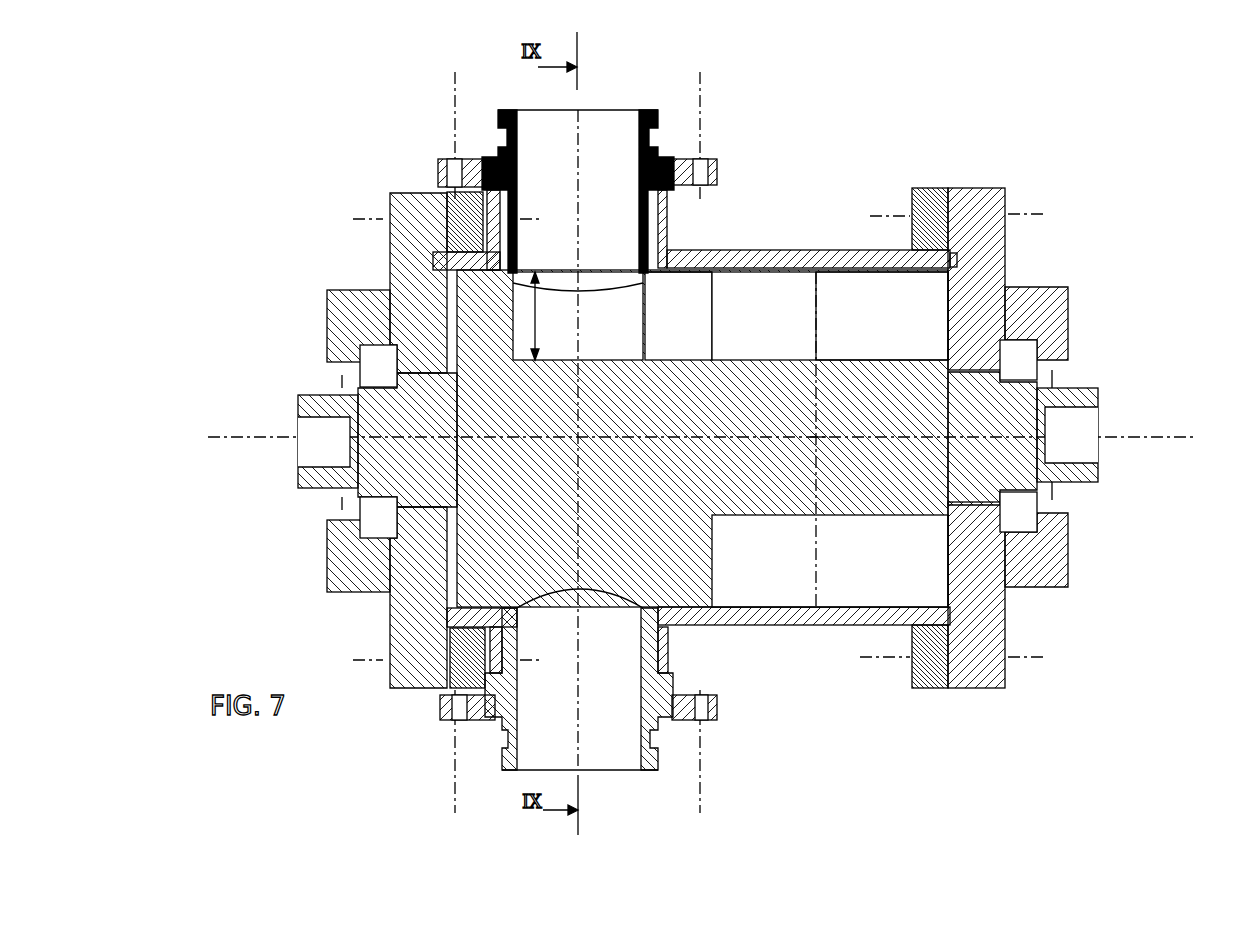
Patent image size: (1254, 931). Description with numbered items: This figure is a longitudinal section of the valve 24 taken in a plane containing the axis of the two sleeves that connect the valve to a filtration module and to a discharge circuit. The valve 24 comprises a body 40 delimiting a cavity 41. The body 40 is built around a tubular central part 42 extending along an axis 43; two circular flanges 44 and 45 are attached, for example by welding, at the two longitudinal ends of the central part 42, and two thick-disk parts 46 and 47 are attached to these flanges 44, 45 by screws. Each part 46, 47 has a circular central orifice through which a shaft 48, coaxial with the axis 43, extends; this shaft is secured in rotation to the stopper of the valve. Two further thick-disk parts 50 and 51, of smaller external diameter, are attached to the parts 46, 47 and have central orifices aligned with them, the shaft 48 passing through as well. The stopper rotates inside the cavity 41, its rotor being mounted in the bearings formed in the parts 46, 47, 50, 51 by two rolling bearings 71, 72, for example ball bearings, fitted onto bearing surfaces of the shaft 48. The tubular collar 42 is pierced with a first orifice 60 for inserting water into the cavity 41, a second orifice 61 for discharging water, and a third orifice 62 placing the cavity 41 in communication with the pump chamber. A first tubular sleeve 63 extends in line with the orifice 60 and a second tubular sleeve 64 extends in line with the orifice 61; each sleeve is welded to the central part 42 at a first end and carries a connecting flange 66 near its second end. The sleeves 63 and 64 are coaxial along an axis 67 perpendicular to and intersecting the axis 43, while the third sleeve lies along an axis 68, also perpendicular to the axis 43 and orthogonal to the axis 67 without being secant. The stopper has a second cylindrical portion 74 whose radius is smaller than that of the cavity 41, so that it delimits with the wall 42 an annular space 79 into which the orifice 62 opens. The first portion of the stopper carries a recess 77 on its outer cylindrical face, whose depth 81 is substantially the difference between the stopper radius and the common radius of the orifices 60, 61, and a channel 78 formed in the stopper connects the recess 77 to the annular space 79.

The valve 24 is at (1091, 155).
The body 40 is at (723, 409).
The cavity 41 is at (771, 345).
The tubular central part 42 is at (853, 250).
The axis 43 is at (1152, 433).
The circular flange 44 is at (471, 672).
The circular flange 45 is at (925, 690).
The part 46 is at (420, 197).
The part 47 is at (983, 208).
The shaft 48 is at (302, 406).
The part 50 is at (355, 290).
The part 51 is at (1045, 290).
The first orifice 60 is at (518, 607).
The second orifice 61 is at (643, 273).
The third orifice 62 is at (891, 512).
The first tubular sleeve 63 is at (672, 672).
The second tubular sleeve 64 is at (668, 222).
The connecting flange 66 is at (720, 170).
The axis 67 is at (580, 213).
The axis 68 is at (818, 437).
The rolling bearing 71 is at (378, 368).
The rolling bearing 72 is at (1020, 364).
The second cylindrical portion 74 is at (740, 497).
The recess 77 is at (571, 345).
The channel 78 is at (691, 345).
The annular space 79 is at (883, 345).
The depth 81 is at (535, 318).